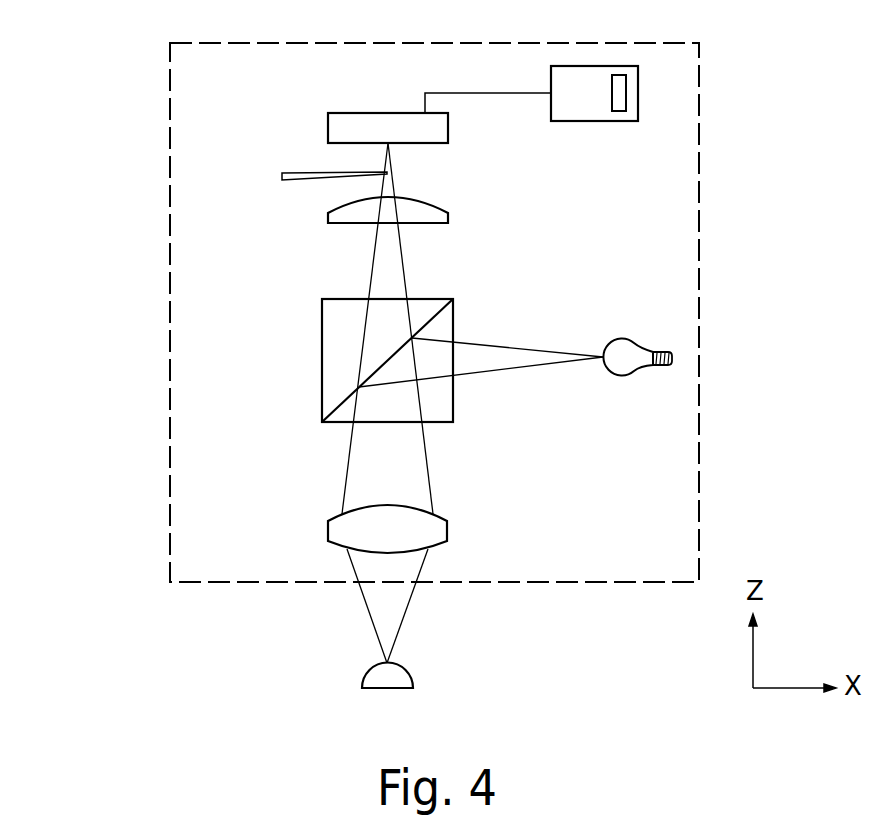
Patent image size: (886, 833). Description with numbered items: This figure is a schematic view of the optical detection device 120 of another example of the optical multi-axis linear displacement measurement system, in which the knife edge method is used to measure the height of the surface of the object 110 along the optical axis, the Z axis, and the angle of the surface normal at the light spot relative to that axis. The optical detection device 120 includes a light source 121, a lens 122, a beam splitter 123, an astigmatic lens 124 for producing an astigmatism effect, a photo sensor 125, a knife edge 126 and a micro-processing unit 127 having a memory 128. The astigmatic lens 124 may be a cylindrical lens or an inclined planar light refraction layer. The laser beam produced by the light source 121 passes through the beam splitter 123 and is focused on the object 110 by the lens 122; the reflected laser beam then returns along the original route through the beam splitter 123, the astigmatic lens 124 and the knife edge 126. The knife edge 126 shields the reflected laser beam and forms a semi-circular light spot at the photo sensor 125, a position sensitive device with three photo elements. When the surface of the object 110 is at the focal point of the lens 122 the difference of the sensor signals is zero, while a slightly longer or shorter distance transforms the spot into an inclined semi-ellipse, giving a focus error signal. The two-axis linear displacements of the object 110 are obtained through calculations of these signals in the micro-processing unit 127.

The object 110 is at (408, 672).
The optical detection device 120 is at (170, 228).
The light source 121 is at (620, 340).
The lens 122 is at (447, 521).
The beam splitter 123 is at (432, 299).
The astigmatic lens 124 is at (425, 203).
The photo sensor 125 is at (353, 113).
The knife edge 126 is at (298, 173).
The micro-processing unit 127 is at (601, 121).
The memory 128 is at (627, 83).